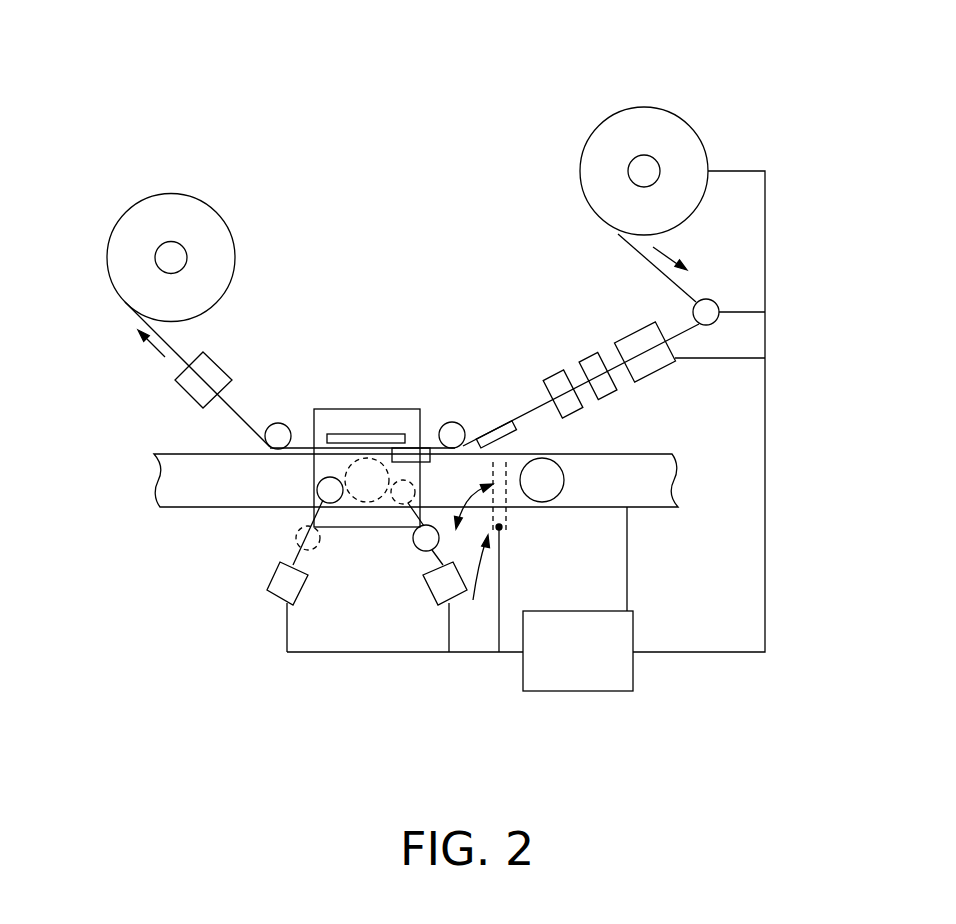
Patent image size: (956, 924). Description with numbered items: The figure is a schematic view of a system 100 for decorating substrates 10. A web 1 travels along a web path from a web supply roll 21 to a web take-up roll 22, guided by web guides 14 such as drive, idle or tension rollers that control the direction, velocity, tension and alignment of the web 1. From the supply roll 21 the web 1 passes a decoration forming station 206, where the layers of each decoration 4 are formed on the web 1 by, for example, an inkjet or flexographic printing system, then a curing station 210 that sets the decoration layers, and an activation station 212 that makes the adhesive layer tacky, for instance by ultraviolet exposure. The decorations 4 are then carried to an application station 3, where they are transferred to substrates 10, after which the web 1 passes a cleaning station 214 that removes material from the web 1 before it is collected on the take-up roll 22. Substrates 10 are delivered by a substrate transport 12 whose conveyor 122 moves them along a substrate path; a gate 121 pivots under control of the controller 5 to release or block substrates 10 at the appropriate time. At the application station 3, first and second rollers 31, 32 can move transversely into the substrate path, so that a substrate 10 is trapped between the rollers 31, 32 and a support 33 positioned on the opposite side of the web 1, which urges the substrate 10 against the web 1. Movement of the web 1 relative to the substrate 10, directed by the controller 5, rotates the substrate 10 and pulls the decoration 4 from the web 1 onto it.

The system 100 is at (255, 82).
The web supply roll 21 is at (598, 143).
The web take-up roll 22 is at (222, 262).
The cleaning station 214 is at (222, 365).
The web guide 14 is at (275, 423).
The web 1 is at (522, 420).
The application station 3 is at (358, 409).
The support 33 is at (340, 440).
The decoration 4 is at (425, 448).
The activation station 212 is at (553, 372).
The curing station 210 is at (612, 395).
The decoration forming station 206 is at (660, 375).
The first roller 31 is at (320, 495).
The second roller 32 is at (398, 506).
The substrate 10 is at (541, 490).
The gate 121 is at (503, 533).
The substrate transport 12 is at (485, 589).
The conveyor 122 is at (665, 510).
The controller 5 is at (585, 665).